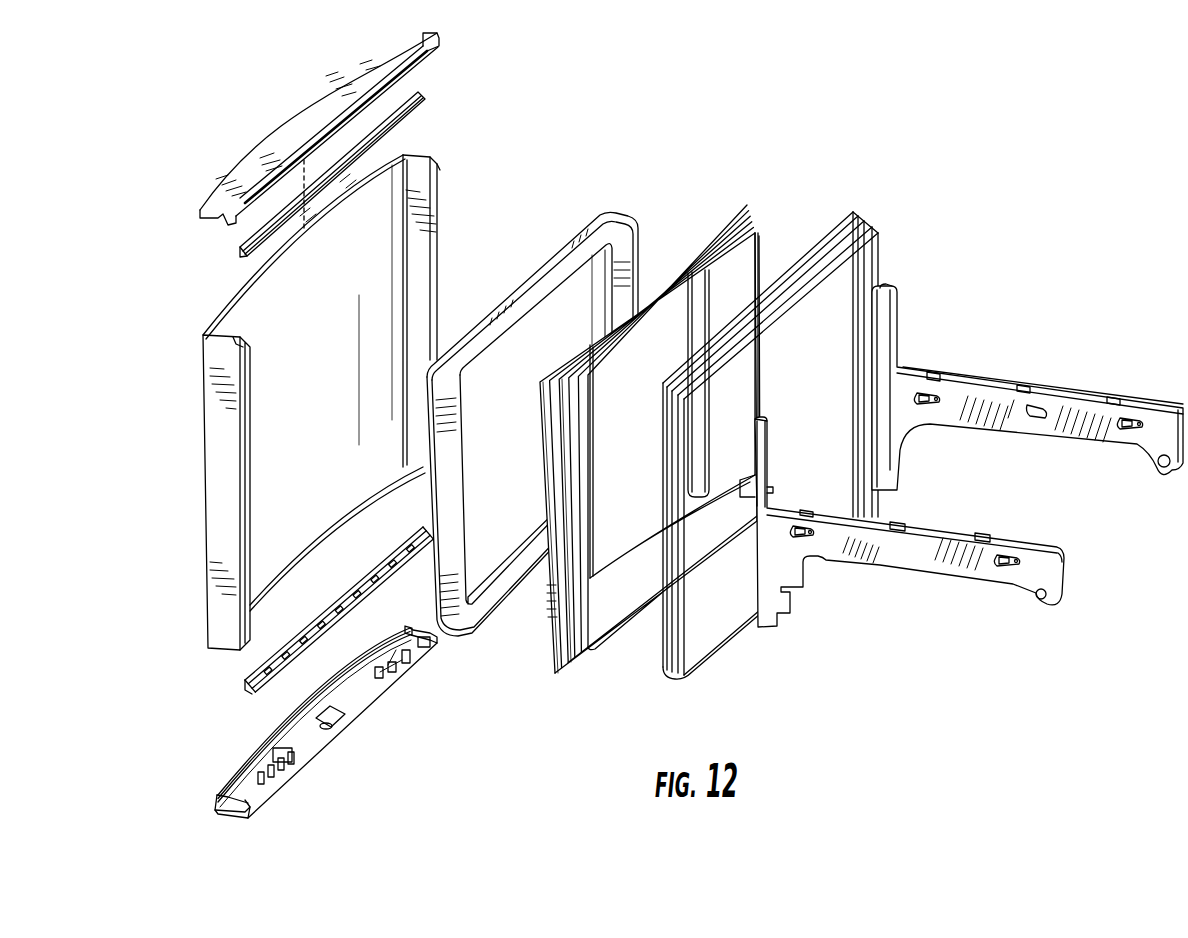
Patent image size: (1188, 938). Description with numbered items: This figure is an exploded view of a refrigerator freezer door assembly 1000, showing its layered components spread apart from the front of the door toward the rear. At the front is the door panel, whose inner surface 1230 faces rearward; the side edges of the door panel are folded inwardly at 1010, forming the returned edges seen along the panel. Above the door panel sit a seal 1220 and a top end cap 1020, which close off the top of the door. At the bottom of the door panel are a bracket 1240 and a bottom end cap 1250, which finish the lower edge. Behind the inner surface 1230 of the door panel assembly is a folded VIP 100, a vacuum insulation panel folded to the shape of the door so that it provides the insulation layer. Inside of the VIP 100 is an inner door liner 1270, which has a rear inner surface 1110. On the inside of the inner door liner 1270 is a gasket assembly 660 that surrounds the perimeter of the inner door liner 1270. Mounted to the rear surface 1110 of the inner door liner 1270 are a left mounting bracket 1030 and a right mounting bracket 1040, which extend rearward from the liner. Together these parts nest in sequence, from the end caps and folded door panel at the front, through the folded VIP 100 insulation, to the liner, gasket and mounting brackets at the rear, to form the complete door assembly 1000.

The refrigerator freezer door assembly 1000 is at (589, 166).
The top end cap 1020 is at (300, 118).
The seal 1220 is at (240, 254).
The inner surface 1230 is at (272, 380).
The folded side edges 1010 is at (217, 503).
The bracket 1240 is at (246, 686).
The bottom end cap 1250 is at (233, 813).
The folded VIP 100 is at (485, 523).
The inner door liner 1270 is at (553, 618).
The rear inner surface 1110 is at (607, 507).
The gasket assembly 660 is at (672, 653).
The left mounting bracket 1030 is at (1050, 400).
The right mounting bracket 1040 is at (930, 563).